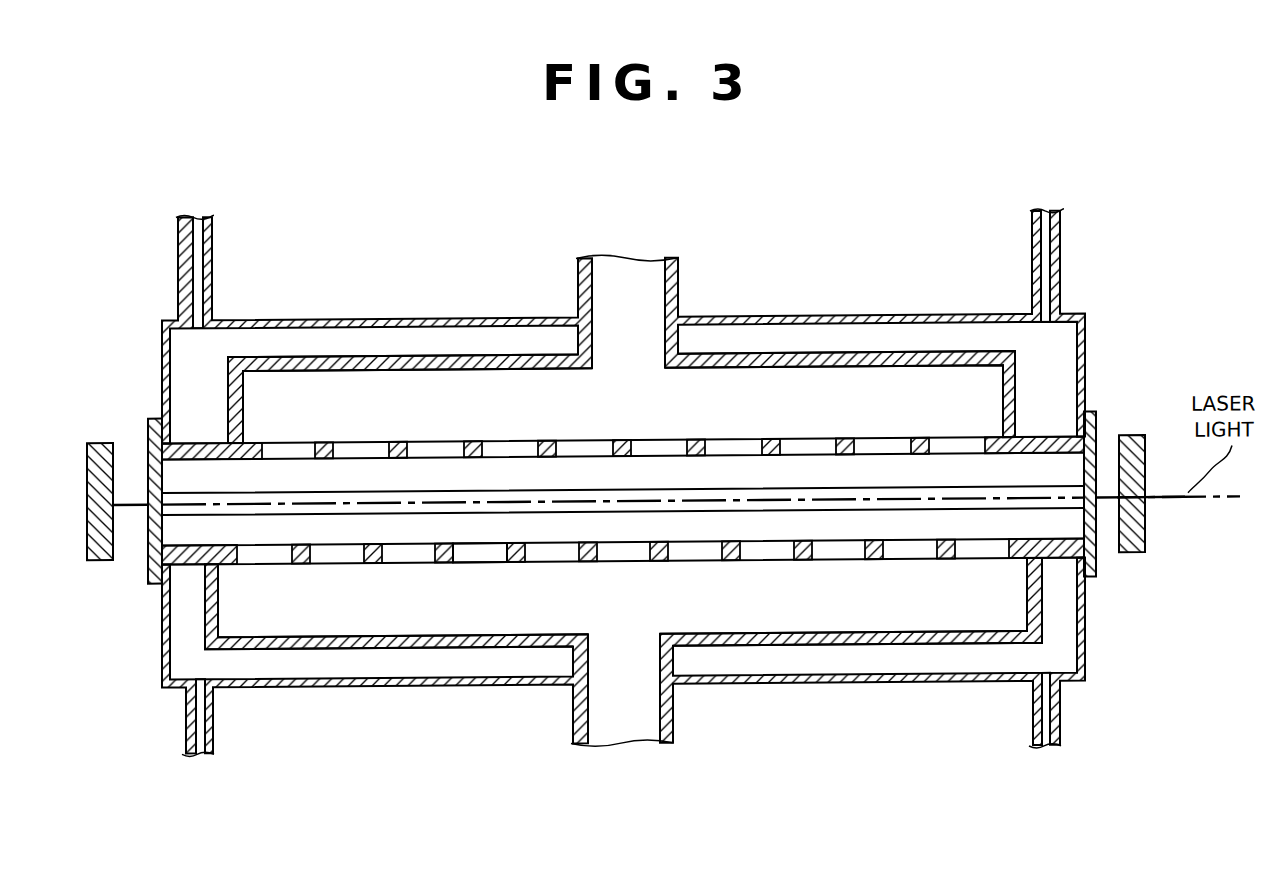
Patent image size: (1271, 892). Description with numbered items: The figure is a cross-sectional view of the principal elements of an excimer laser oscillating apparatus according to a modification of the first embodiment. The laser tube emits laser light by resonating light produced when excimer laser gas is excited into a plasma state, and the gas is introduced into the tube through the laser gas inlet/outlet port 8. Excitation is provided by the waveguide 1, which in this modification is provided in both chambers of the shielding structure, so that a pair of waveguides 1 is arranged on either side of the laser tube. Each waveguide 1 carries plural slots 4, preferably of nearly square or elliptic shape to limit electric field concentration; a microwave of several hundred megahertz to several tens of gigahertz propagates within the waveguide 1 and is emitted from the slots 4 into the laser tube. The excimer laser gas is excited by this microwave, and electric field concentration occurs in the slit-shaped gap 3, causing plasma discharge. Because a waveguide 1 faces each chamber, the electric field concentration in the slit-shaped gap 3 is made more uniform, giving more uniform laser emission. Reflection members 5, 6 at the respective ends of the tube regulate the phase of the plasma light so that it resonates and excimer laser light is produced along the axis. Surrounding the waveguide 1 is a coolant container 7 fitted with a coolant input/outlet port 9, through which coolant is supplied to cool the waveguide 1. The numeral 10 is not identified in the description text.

The waveguide 1 is at (368, 648).
The slit-shaped gap 3 is at (873, 487).
The slot 4 is at (838, 561).
The reflection member 5 is at (1147, 533).
The reflection member 6 is at (87, 529).
The coolant container 7 is at (255, 686).
The laser gas inlet/outlet port 8 is at (212, 271).
The coolant input/outlet port 9 is at (186, 730).
The insulating section 10 is at (482, 562).